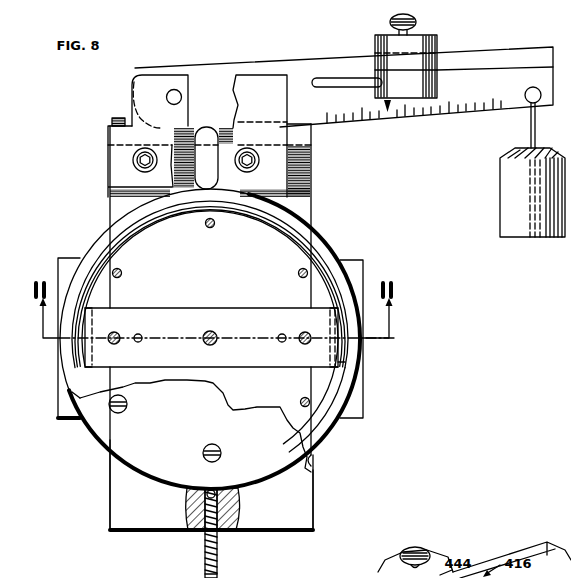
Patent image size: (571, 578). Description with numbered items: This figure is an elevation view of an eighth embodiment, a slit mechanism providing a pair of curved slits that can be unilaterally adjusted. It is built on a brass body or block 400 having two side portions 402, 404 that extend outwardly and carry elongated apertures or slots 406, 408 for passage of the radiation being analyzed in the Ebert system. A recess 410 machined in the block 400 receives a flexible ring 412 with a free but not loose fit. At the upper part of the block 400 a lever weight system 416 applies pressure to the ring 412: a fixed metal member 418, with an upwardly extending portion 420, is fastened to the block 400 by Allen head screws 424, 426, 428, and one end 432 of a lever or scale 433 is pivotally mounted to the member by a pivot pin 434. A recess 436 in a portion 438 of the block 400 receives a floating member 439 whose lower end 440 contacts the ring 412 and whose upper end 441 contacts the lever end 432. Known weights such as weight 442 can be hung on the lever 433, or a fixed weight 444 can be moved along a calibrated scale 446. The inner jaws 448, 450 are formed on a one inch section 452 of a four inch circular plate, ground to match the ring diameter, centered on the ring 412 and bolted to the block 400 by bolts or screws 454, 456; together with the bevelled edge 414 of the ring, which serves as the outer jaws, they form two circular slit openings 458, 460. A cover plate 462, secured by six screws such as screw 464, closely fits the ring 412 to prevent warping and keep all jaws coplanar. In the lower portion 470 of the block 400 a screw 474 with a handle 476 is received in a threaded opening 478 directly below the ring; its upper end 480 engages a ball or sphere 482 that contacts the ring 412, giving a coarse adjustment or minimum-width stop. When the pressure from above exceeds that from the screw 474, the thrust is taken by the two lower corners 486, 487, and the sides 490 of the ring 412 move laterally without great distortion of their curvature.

The brass body or block 400 is at (104, 207).
The side portion 402 is at (68, 262).
The side portion 404 is at (358, 262).
The elongated aperture or slot 406 is at (88, 306).
The elongated aperture or slot 408 is at (324, 306).
The recess 410 is at (316, 466).
The flexible ring 412 is at (313, 255).
The bevelled edge 414 is at (333, 262).
The lever weight system 416 is at (437, 117).
The fixed metal member 418 is at (107, 170).
The upwardly extending portion 420 is at (258, 90).
The Allen head screw 424 is at (112, 120).
The Allen head screw 426 is at (155, 171).
The Allen head screw 428 is at (246, 171).
The end of lever 432 is at (208, 77).
The lever or scale 433 is at (483, 48).
The pivot pin 434 is at (172, 89).
The recess 436 is at (216, 190).
The portion of block 438 is at (195, 190).
The floating member 439 is at (196, 166).
The lower end of floating member 440 is at (206, 191).
The upper end of floating member 441 is at (206, 127).
The weight 442 is at (511, 193).
The fixed weight 444 is at (434, 36).
The calibrated scale 446 is at (396, 113).
The inner jaw 448 is at (98, 323).
The inner jaw 450 is at (325, 323).
The section of circular plate 452 is at (198, 328).
The bolt or screw 454 is at (118, 344).
The bolt or screw 456 is at (306, 344).
The circular slit opening 458 is at (83, 362).
The circular slit opening 460 is at (345, 362).
The cover plate 462 is at (147, 465).
The screw 464 is at (207, 444).
The lower portion of block 470 is at (142, 513).
The screw 474 is at (219, 544).
The handle 476 is at (240, 577).
The threaded opening 478 is at (195, 522).
The upper end of screw 480 is at (240, 510).
The ball or sphere 482 is at (215, 491).
The lower corner 486 is at (110, 461).
The lower corner 487 is at (318, 458).
The sides of ring 490 is at (65, 352).